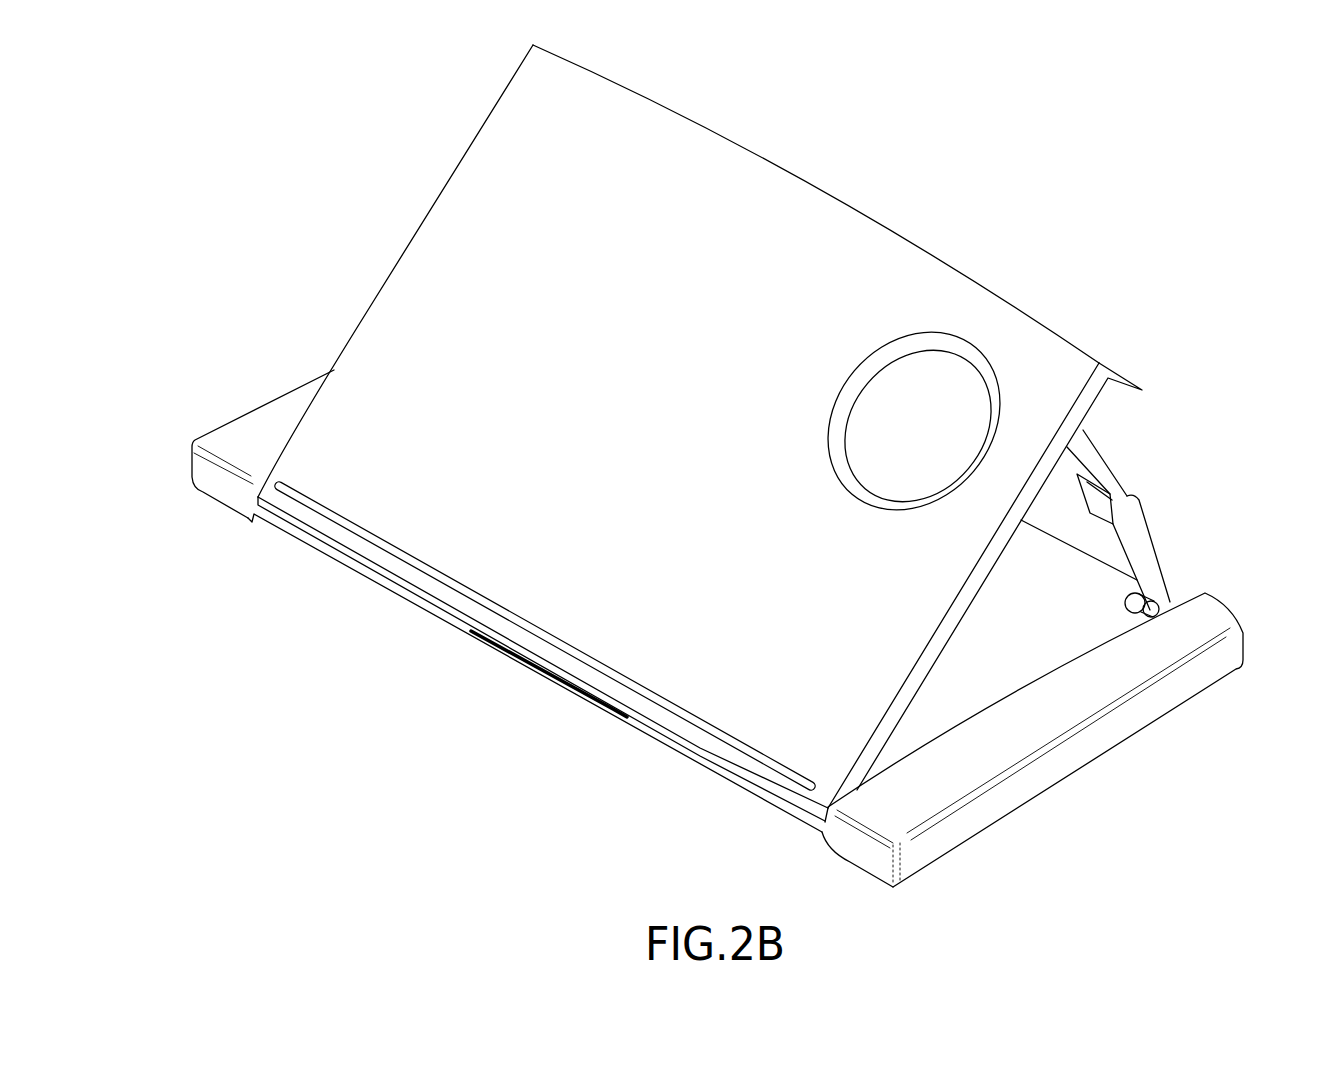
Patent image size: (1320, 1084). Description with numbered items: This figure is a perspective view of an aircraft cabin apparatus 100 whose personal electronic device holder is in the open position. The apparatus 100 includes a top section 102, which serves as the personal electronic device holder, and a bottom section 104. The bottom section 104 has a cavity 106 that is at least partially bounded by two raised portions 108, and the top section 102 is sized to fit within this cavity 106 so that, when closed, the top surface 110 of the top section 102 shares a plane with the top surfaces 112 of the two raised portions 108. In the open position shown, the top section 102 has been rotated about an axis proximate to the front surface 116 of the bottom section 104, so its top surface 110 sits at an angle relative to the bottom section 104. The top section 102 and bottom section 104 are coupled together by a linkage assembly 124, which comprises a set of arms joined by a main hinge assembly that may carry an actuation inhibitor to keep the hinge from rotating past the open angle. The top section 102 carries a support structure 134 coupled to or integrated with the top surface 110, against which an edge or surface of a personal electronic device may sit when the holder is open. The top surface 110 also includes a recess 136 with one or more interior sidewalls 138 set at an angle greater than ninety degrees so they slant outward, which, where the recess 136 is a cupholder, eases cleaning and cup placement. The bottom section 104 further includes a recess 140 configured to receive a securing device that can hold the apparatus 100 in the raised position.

The apparatus 100 is at (262, 157).
The top section 102 is at (935, 195).
The bottom section 104 is at (215, 550).
The cavity 106 is at (958, 690).
The raised portions 108 is at (247, 413).
The top surface 110 is at (655, 104).
The top surfaces 112 is at (293, 405).
The front surface 116 is at (624, 710).
The linkage assembly 124 is at (1150, 495).
The support structure 134 is at (377, 543).
The recess 136 is at (973, 380).
The interior sidewalls 138 is at (958, 338).
The recess 140 is at (537, 665).